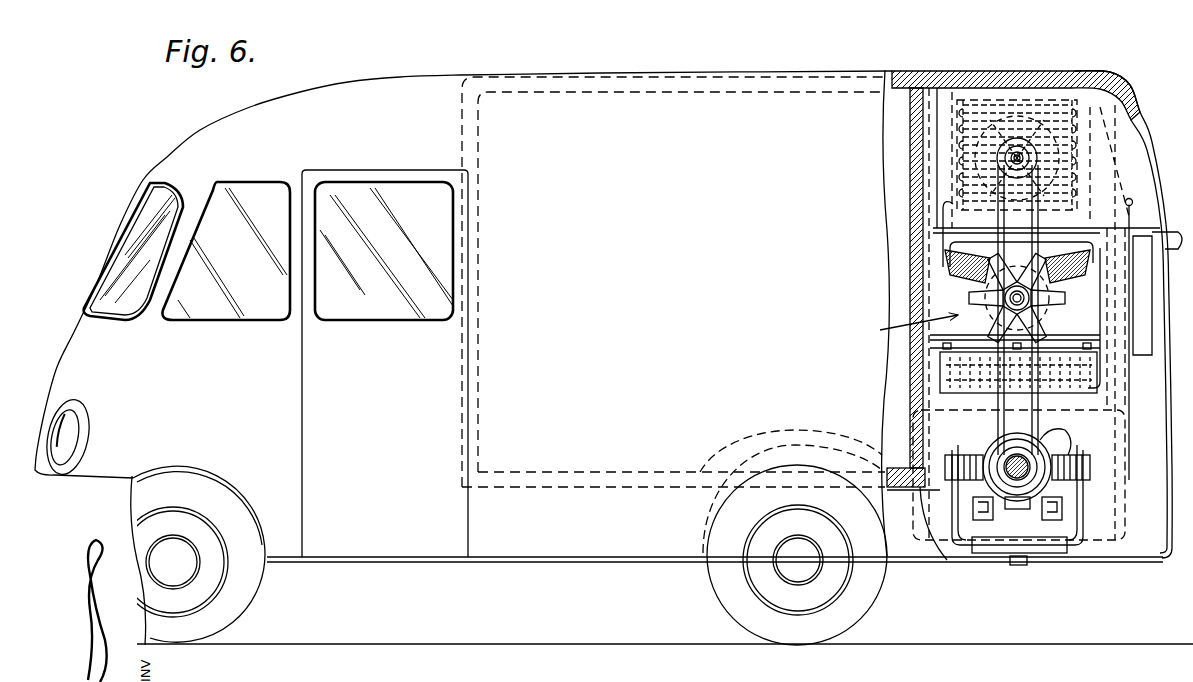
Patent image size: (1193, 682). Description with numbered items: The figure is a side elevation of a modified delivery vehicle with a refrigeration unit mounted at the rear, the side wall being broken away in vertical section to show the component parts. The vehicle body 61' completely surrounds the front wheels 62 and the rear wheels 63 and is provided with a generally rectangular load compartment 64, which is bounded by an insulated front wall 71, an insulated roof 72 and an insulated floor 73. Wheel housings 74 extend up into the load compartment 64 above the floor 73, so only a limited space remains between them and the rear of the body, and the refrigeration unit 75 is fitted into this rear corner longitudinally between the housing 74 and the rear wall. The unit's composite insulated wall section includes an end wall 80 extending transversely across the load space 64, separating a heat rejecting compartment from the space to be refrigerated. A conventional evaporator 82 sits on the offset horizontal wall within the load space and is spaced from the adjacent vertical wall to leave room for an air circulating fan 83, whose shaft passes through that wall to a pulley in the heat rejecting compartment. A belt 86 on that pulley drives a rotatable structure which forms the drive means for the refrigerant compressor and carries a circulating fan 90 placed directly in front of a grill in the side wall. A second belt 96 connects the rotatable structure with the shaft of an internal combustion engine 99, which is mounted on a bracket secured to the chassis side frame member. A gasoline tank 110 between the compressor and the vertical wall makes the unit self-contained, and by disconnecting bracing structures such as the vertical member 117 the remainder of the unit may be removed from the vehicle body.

The vehicle body 61' is at (715, 587).
The front wheels 62 is at (257, 602).
The rear wheels 63 is at (870, 600).
The load compartment 64 is at (885, 128).
The insulated front wall 71 is at (462, 120).
The roof 72 is at (1030, 70).
The floor 73 is at (660, 480).
The wheel housings 74 is at (745, 445).
The refrigeration unit 75 is at (900, 324).
The end wall 80 is at (910, 243).
The evaporator 82 is at (947, 95).
The air circulating fan 83 is at (993, 98).
The belt 86 is at (1040, 217).
The circulating fan 90 is at (1060, 305).
The belt 96 is at (997, 413).
The internal combustion engine 99 is at (1060, 442).
The gasoline tank 110 is at (1143, 355).
The supporting and bracing structure 117 is at (887, 425).